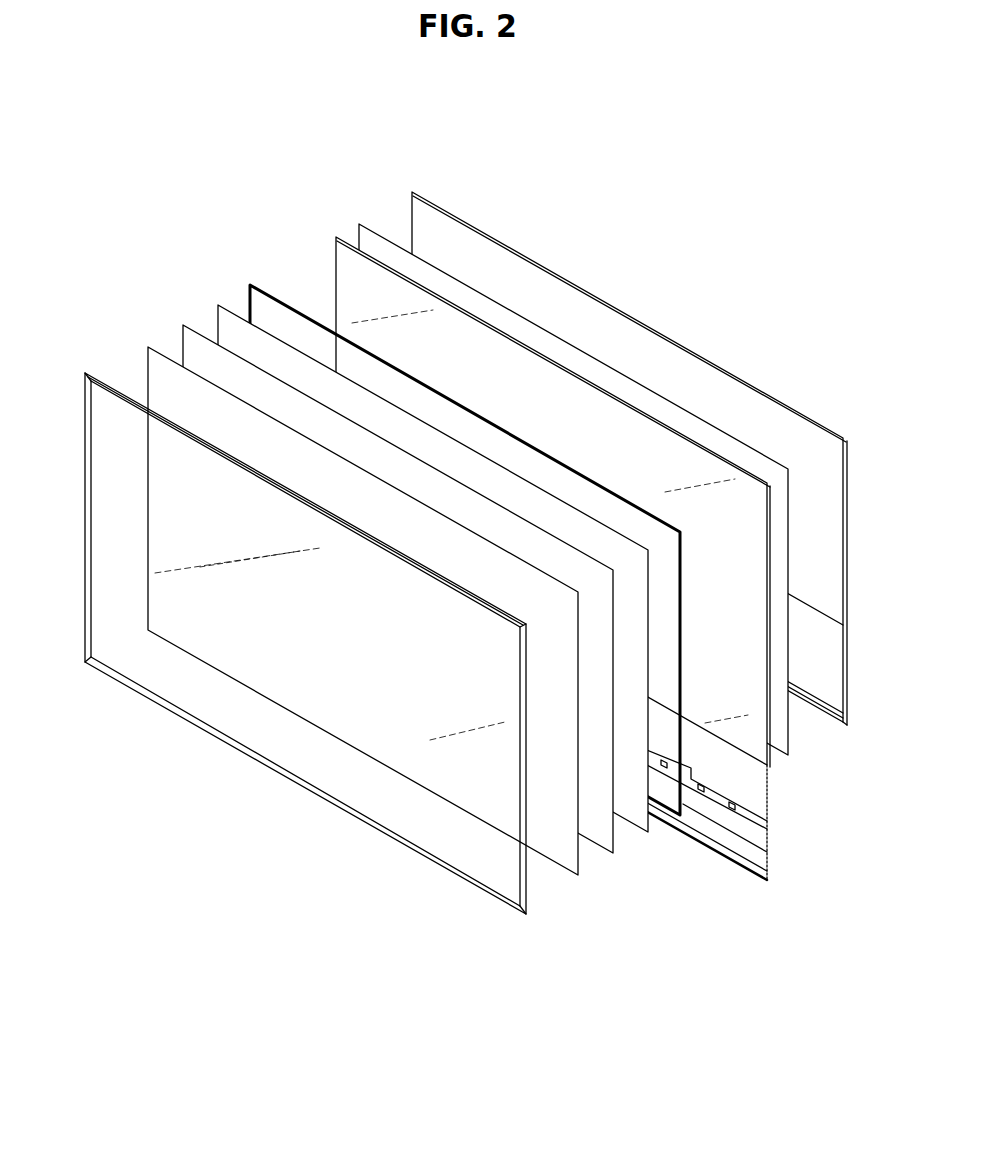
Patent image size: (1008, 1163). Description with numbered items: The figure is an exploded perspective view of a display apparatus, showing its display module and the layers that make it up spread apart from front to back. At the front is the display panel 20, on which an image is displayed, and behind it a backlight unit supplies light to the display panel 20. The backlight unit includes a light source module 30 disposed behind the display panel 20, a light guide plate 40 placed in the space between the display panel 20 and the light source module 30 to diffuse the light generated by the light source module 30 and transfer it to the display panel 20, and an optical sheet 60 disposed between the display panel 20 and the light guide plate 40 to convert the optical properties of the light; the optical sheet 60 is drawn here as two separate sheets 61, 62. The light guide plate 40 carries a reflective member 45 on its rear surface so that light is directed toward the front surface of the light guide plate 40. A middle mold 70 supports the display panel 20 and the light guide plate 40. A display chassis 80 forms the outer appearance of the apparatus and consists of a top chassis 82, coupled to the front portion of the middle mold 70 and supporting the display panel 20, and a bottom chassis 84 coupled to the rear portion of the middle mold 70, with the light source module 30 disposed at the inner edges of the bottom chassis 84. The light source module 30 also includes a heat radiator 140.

The display chassis 80 is at (238, 188).
The top chassis 82 is at (108, 366).
The bottom chassis 84 is at (404, 196).
The display panel 20 is at (562, 855).
The light source module 30 is at (758, 890).
The light guide plate 40 is at (737, 490).
The reflective member 45 is at (789, 757).
The optical sheet 60 is at (674, 897).
The first optical sheet 61 is at (641, 822).
The second optical sheet 62 is at (604, 845).
The middle mold 70 is at (690, 822).
The heat radiator 140 is at (768, 820).